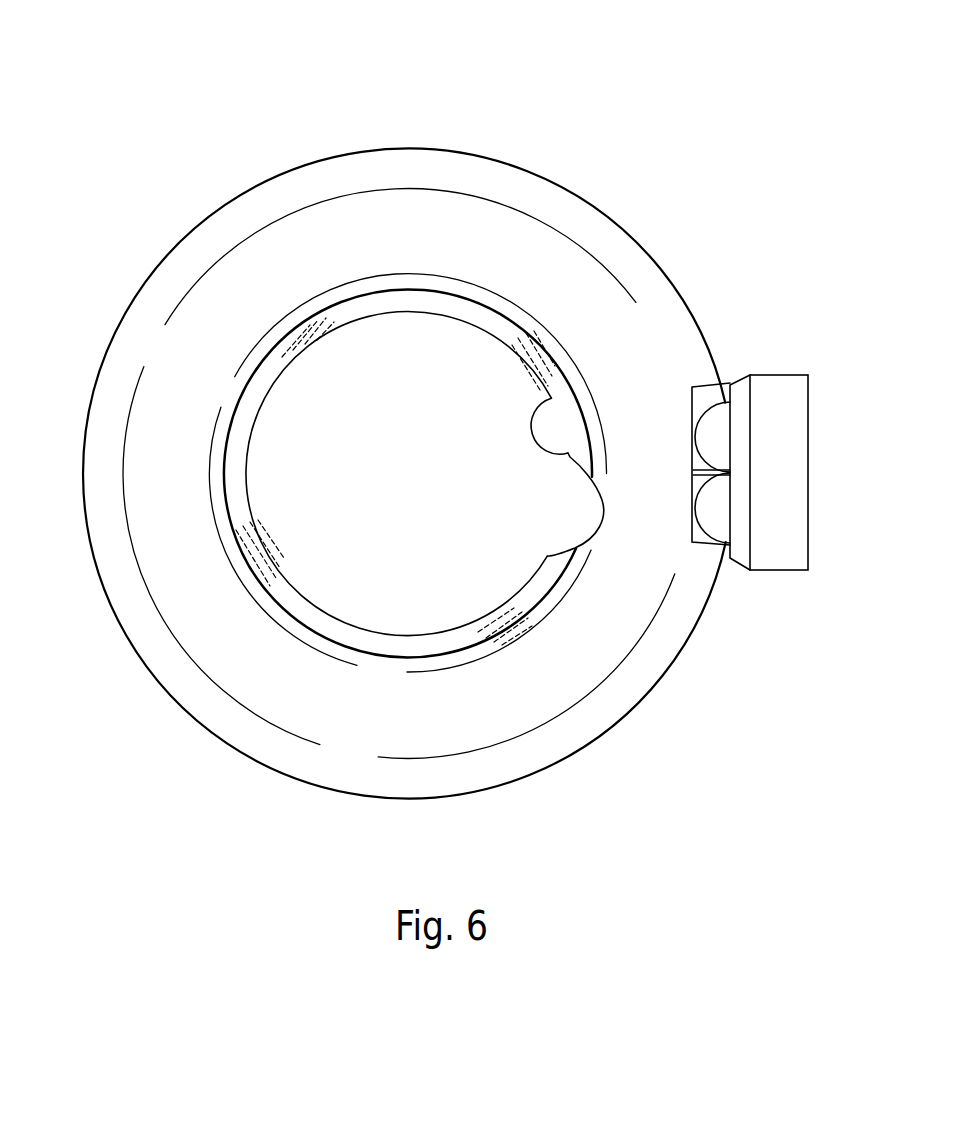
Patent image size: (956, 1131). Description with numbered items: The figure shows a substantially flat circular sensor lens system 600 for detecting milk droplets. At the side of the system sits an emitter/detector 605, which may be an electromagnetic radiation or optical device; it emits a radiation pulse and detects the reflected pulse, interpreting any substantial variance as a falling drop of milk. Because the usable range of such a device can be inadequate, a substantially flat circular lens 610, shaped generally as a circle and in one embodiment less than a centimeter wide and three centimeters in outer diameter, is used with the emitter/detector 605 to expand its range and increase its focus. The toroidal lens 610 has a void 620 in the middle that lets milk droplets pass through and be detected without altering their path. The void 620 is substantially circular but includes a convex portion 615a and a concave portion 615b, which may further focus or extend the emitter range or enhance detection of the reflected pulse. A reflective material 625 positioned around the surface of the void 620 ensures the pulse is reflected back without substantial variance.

The substantially flat circular sensor lens system 600 is at (583, 36).
The emitter/detector 605 is at (777, 393).
The flat circular lens 610 is at (595, 230).
The convex portion 615a is at (540, 432).
The concave portion 615b is at (577, 530).
The void 620 is at (397, 392).
The reflective material 625 is at (248, 512).